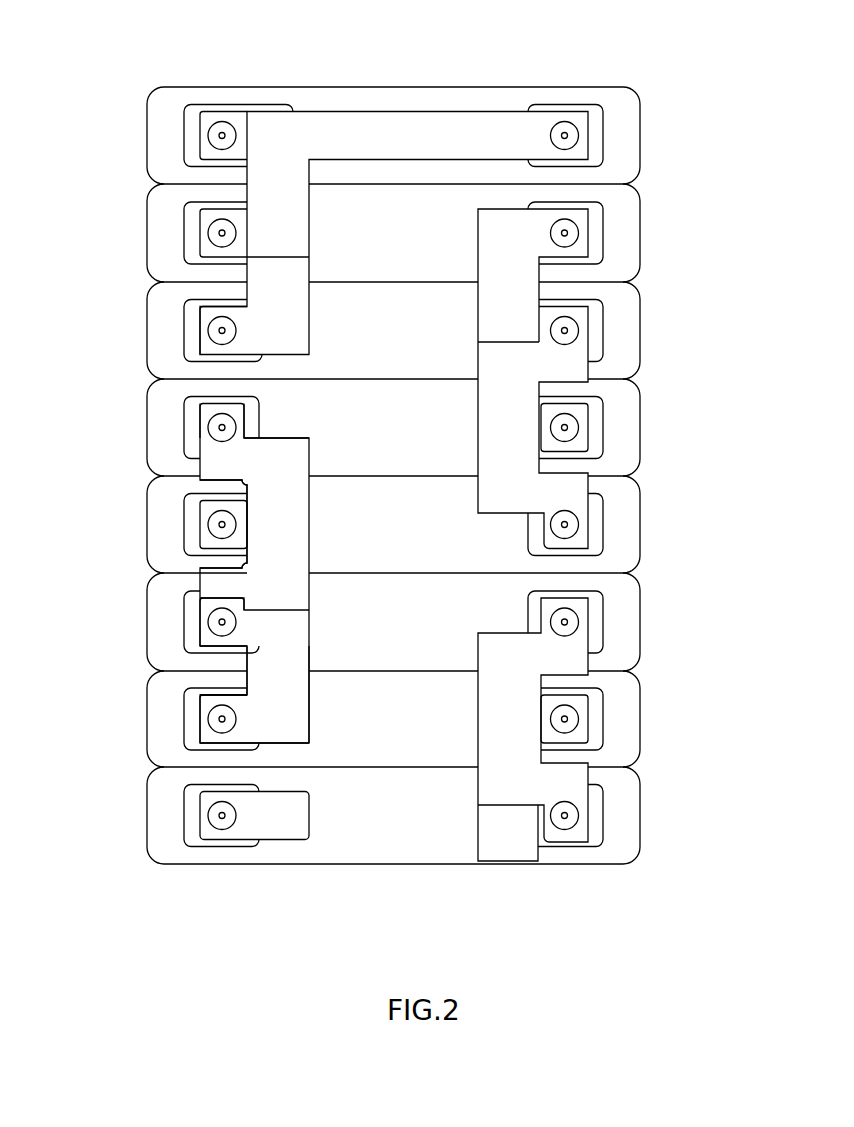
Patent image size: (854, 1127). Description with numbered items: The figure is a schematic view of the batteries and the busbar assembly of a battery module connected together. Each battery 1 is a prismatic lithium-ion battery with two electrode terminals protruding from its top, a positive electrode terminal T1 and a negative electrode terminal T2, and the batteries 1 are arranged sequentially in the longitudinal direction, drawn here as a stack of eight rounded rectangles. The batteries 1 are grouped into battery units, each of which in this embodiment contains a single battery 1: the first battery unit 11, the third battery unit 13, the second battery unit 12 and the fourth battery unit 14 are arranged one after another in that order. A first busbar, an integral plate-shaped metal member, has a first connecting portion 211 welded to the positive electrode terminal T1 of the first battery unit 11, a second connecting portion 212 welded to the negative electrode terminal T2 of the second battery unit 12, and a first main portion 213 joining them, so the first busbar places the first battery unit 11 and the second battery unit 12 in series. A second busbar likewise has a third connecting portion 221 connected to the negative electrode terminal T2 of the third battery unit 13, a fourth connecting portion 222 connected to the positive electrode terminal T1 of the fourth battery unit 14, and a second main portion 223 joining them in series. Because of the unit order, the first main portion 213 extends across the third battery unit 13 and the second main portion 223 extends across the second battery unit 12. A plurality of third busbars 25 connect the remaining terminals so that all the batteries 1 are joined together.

The battery 1 is at (625, 166).
The first battery unit 11 is at (167, 408).
The second battery unit 12 is at (167, 602).
The third battery unit 13 is at (167, 504).
The fourth battery unit 14 is at (167, 699).
The third busbar 25 is at (402, 133).
The first connecting portion 211 is at (232, 452).
The second connecting portion 212 is at (237, 622).
The first main portion 213 is at (293, 498).
The third connecting portion 221 is at (242, 532).
The fourth connecting portion 222 is at (237, 733).
The second main portion 223 is at (295, 678).
The positive electrode terminal T1 is at (186, 344).
The negative electrode terminal T2 is at (186, 148).